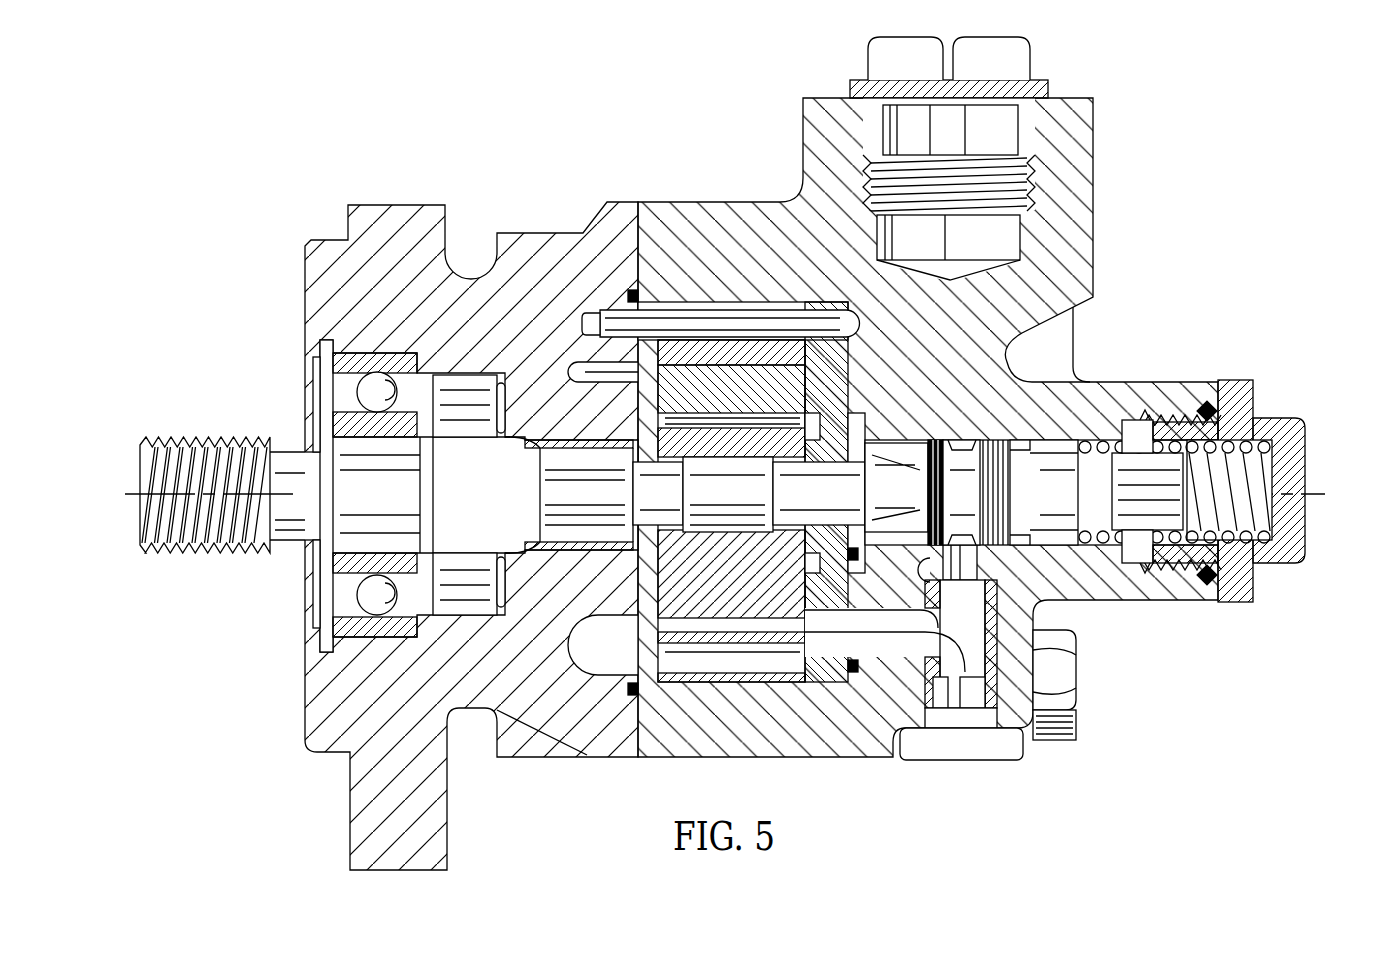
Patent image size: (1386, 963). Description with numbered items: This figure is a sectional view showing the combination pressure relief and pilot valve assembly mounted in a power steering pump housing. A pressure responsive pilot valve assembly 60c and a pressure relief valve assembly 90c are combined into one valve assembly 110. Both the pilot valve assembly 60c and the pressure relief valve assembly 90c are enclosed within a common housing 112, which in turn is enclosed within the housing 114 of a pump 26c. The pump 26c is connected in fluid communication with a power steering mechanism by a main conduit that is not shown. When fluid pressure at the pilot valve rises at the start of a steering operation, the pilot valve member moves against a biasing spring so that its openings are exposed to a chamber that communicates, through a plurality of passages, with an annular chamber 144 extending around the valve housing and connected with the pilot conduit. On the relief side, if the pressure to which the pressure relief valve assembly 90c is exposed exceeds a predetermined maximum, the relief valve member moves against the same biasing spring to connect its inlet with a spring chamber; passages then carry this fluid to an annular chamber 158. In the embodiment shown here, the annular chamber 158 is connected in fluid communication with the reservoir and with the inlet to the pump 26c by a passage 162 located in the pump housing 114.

The pump 26c is at (562, 194).
The pump housing 114 is at (1070, 183).
The valve assembly 110 is at (1078, 441).
The annular chamber 158 is at (965, 445).
The annular chamber 144 is at (1022, 448).
The pilot valve assembly 60c is at (915, 470).
The common housing 112 is at (1055, 510).
The pressure relief valve assembly 90c is at (1167, 503).
The passage 162 is at (957, 635).